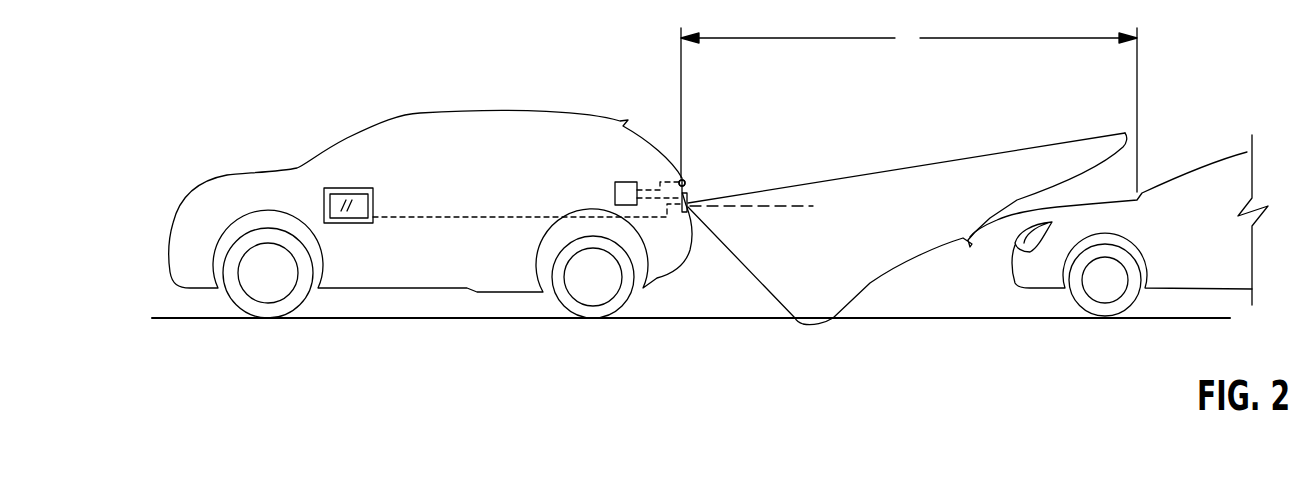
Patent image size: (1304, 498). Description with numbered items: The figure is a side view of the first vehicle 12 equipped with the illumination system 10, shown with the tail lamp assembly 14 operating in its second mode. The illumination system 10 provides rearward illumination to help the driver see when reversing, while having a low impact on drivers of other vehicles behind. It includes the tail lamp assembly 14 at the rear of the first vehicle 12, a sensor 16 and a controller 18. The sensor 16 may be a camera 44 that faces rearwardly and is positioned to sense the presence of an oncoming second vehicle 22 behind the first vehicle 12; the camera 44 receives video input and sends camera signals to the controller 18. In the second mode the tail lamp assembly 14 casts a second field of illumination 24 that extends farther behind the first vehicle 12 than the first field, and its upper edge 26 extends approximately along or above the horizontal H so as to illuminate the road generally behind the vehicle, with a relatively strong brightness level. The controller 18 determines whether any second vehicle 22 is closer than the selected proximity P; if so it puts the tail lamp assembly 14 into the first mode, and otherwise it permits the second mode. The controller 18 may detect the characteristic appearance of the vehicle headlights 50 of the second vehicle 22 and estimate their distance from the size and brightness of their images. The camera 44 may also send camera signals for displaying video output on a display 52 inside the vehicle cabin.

The illumination system 10 is at (790, 117).
The first vehicle 12 is at (590, 112).
The tail lamp assembly 14 is at (690, 193).
The sensor 16 is at (685, 181).
The controller 18 is at (631, 182).
The second vehicle 22 is at (1095, 228).
The second field of illumination 24 is at (907, 229).
The upper edge of the second field of illumination 26 is at (945, 160).
The camera 44 is at (685, 181).
The vehicle headlights 50 is at (1016, 243).
The display 52 is at (347, 188).
The horizontal H is at (795, 207).
The selected proximity P is at (909, 107).